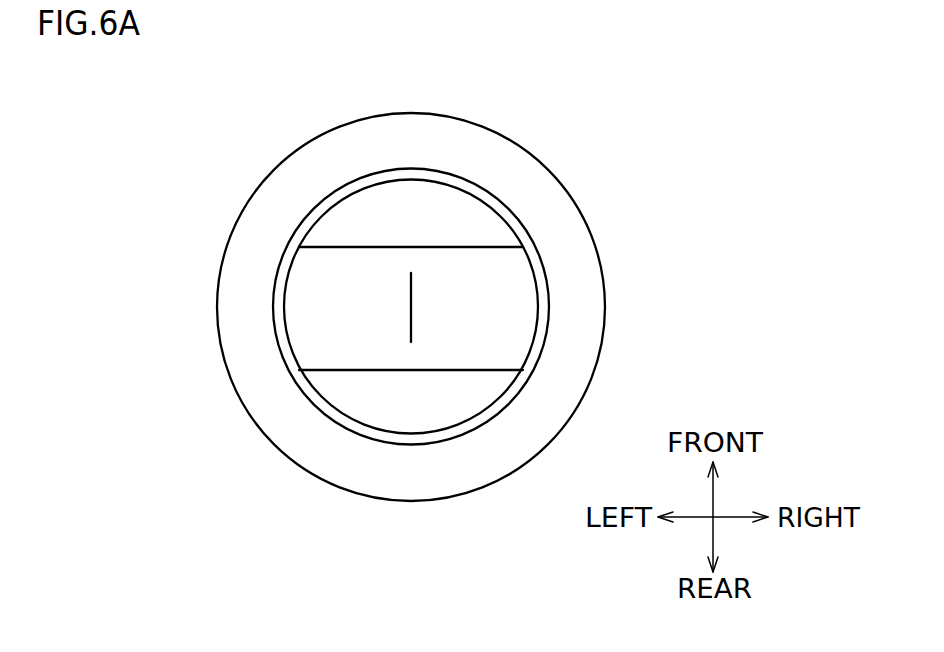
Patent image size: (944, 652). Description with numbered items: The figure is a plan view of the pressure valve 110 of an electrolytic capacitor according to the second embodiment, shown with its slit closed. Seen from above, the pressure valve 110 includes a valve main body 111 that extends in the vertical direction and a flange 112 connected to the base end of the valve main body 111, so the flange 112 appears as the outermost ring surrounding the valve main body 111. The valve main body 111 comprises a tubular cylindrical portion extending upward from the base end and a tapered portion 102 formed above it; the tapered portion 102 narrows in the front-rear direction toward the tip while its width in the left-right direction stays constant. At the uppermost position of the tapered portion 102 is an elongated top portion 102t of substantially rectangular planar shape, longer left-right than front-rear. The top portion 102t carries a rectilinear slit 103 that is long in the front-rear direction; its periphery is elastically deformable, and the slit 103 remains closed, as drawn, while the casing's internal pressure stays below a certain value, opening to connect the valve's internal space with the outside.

The pressure valve 110 is at (526, 103).
The flange 112 is at (567, 190).
The valve main body 111 is at (315, 225).
The tapered portion 102 is at (411, 193).
The top portion 102t is at (310, 336).
The slit 103 is at (411, 303).